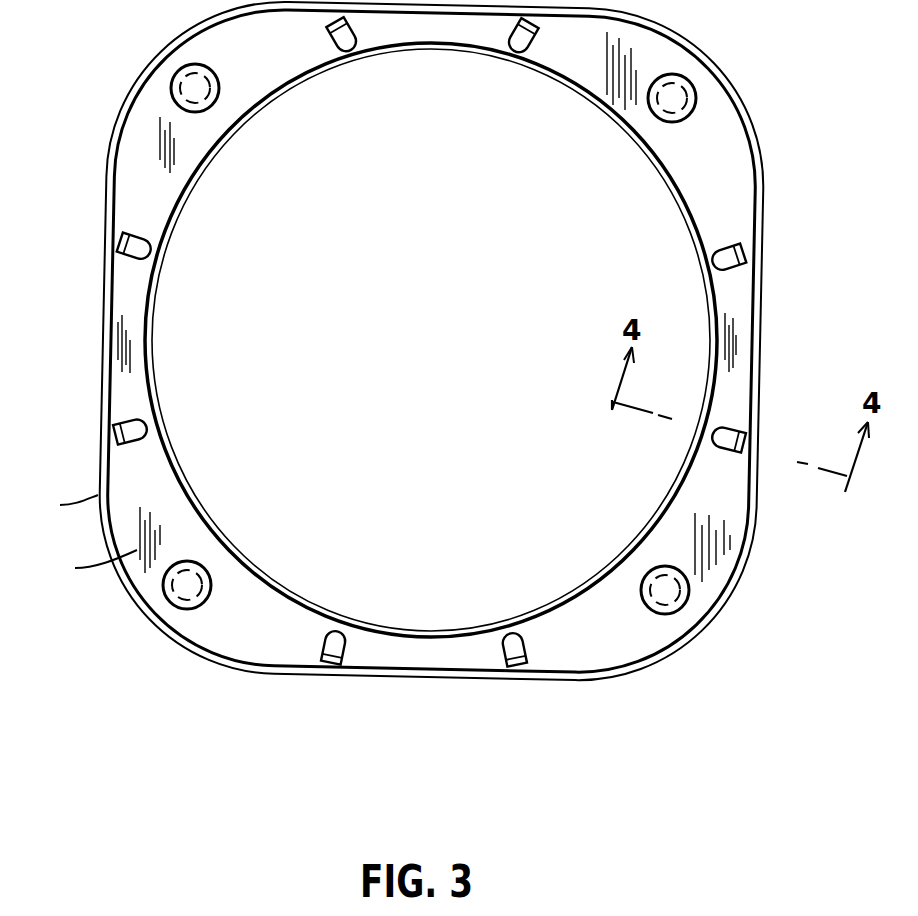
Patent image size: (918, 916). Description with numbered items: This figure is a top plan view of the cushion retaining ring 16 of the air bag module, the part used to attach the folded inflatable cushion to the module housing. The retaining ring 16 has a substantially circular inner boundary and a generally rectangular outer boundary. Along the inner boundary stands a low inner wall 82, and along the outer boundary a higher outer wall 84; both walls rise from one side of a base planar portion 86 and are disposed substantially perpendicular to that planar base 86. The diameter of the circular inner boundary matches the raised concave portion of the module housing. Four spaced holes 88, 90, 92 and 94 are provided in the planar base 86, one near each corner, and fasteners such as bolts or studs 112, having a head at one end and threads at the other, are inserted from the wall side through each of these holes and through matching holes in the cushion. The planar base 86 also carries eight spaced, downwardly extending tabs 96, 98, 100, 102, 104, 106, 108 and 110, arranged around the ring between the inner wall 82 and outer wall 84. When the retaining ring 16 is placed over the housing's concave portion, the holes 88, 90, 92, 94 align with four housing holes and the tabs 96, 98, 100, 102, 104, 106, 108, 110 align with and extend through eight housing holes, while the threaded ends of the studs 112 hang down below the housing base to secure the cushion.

The cushion retaining ring 16 is at (431, 356).
The inner wall 82 is at (203, 517).
The outer wall 84 is at (62, 505).
The base planar portion 86 is at (89, 564).
The hole 88 is at (216, 78).
The hole 90 is at (680, 113).
The hole 92 is at (205, 600).
The hole 94 is at (643, 597).
The tab 96 is at (333, 43).
The tab 98 is at (138, 248).
The tab 100 is at (135, 437).
The tab 102 is at (328, 637).
The tab 104 is at (517, 648).
The tab 106 is at (720, 442).
The tab 108 is at (722, 253).
The tab 110 is at (535, 43).
The stud 112 is at (696, 82).